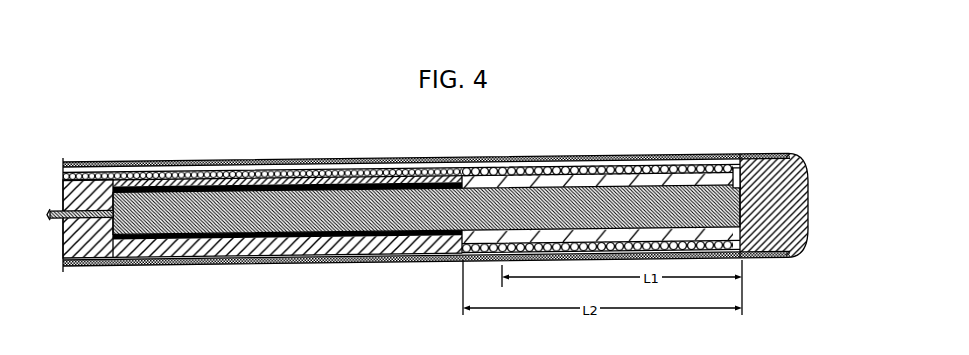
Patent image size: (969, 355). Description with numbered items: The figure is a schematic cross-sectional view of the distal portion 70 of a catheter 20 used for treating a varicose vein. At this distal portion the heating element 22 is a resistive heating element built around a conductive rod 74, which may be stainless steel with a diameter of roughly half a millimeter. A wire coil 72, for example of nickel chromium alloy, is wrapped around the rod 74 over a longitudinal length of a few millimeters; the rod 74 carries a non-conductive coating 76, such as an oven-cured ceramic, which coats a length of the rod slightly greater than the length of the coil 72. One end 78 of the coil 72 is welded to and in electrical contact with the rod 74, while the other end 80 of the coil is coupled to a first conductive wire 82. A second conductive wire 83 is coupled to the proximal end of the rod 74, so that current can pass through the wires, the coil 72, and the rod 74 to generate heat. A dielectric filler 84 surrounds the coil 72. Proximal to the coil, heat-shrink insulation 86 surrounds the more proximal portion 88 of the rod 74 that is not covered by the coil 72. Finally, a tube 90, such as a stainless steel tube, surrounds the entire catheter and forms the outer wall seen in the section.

The catheter 20 is at (221, 128).
The heating element 22 is at (681, 142).
The distal portion 70 is at (304, 126).
The wire coil 72 is at (640, 164).
The conductive rod 74 is at (577, 208).
The non-conductive coating 76 is at (610, 183).
The one end of coil 78 is at (757, 160).
The other end of coil 80 is at (504, 168).
The first conductive wire 82 is at (473, 158).
The second conductive wire 83 is at (74, 202).
The dielectric filler 84 is at (461, 250).
The heat-shrink insulation 86 is at (302, 250).
The more proximal portion of rod 88 is at (181, 293).
The tube 90 is at (343, 258).